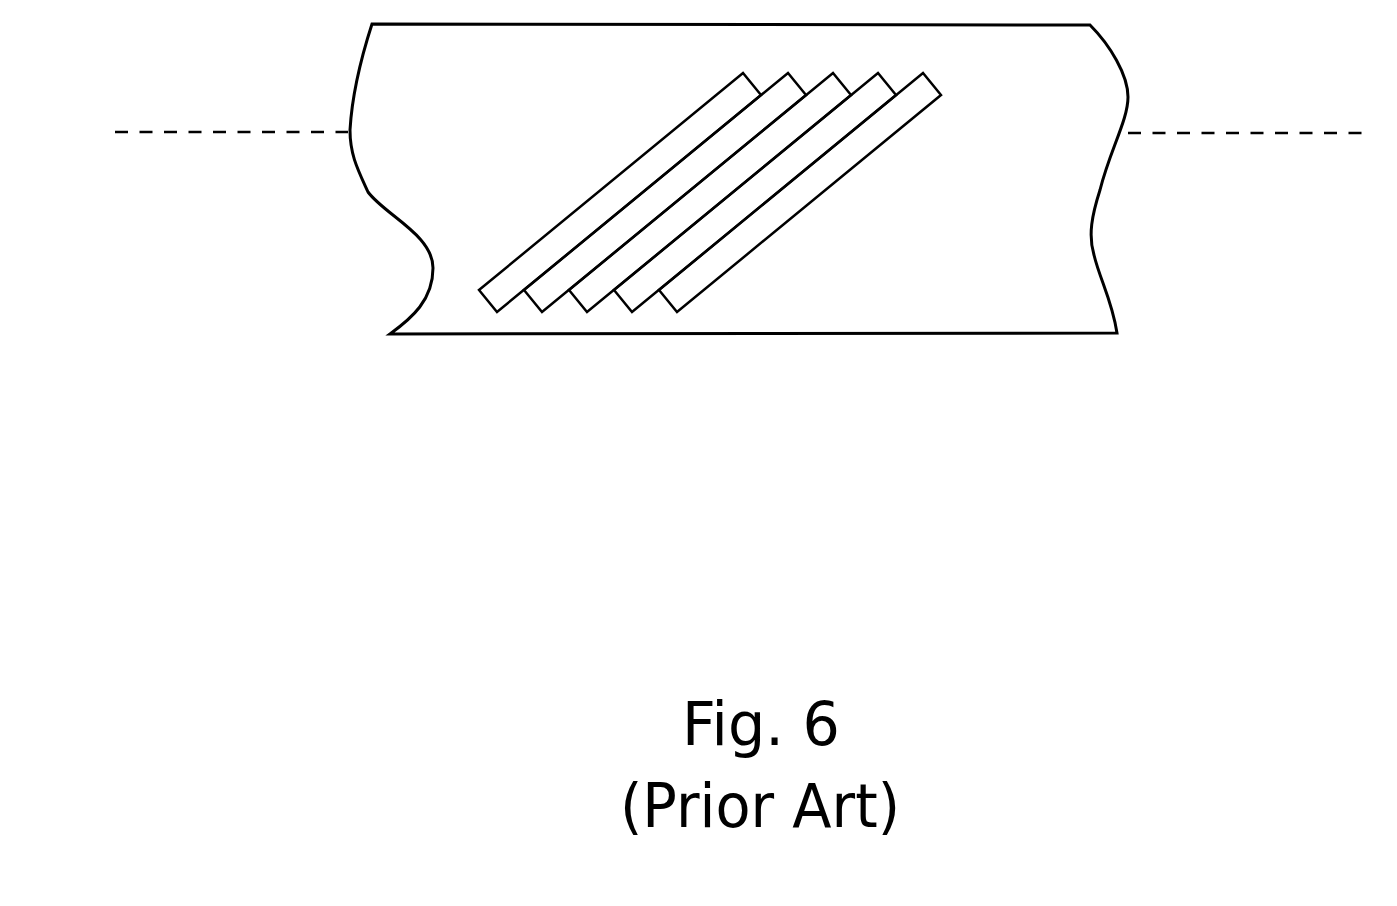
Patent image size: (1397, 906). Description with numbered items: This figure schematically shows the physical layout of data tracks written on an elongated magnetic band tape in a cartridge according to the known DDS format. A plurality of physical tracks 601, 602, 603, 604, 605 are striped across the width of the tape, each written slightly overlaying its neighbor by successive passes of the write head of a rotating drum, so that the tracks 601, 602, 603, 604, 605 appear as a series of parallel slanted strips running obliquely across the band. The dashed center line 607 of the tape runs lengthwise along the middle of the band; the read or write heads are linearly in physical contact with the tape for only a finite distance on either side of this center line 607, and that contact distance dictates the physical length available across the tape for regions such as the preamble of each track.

The first slanted strip 601 is at (620, 172).
The second slanted strip 602 is at (534, 304).
The third slanted strip 603 is at (578, 303).
The fourth slanted strip 604 is at (618, 305).
The fifth slanted strip 605 is at (828, 189).
The center line 607 is at (747, 110).